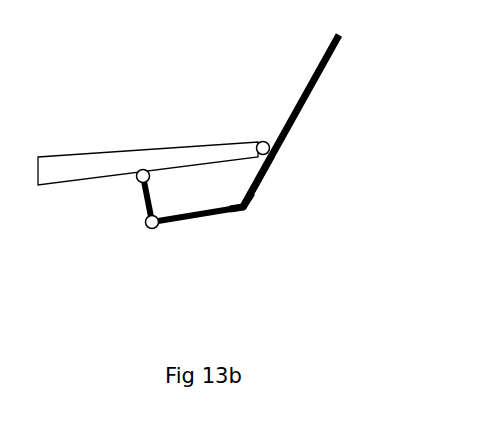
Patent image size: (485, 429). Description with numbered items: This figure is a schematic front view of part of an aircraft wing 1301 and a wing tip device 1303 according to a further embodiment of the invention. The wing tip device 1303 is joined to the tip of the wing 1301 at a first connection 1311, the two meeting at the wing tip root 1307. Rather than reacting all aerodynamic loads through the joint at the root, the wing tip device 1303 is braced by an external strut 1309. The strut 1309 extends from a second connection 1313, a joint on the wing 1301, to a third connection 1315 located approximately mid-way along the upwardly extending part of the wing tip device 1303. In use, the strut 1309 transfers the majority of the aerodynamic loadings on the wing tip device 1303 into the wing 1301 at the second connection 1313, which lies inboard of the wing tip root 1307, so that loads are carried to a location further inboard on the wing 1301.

The wing 1301 is at (83, 160).
The wing tip device 1303 is at (312, 92).
The wing tip root 1307 is at (275, 157).
The strut 1309 is at (200, 218).
The first connection 1311 is at (262, 142).
The second connection 1313 is at (137, 185).
The third connection 1315 is at (255, 215).